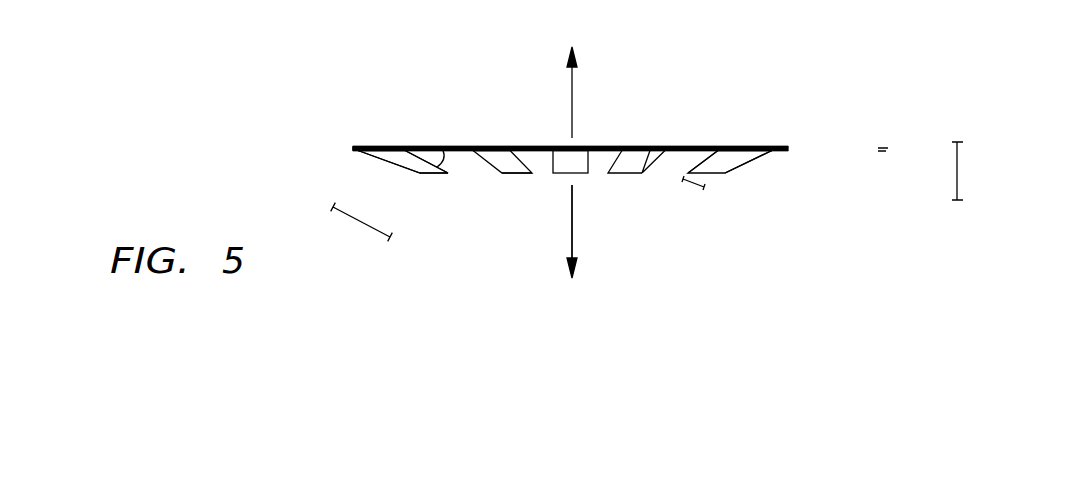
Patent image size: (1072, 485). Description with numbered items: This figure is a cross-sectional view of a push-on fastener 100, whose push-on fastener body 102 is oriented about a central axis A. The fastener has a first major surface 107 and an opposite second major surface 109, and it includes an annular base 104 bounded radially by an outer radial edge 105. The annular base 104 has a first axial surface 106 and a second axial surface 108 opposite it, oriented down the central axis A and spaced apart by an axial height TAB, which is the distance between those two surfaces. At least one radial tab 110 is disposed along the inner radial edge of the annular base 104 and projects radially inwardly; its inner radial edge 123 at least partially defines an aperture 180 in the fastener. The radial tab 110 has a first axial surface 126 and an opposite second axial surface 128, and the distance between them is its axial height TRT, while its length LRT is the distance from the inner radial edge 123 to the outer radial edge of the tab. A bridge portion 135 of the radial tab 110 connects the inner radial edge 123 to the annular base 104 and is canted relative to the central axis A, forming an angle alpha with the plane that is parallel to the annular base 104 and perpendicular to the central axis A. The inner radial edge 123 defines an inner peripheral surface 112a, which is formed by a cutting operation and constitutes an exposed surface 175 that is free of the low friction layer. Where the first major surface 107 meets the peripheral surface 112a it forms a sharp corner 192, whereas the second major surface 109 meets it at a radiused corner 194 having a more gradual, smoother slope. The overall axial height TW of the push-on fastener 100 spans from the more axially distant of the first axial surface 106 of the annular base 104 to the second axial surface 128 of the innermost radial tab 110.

The push-on fastener 100 is at (935, 90).
The push-on fastener body 102 is at (790, 147).
The annular base 104 is at (790, 151).
The outer radial edge 105 is at (353, 147).
The first axial surface 106 is at (367, 147).
The first major surface 107 is at (514, 147).
The second axial surface 108 is at (364, 155).
The second major surface 109 is at (533, 175).
The radial tab 110 is at (427, 176).
The inner peripheral surface 112a is at (582, 175).
The inner radial edge 123 is at (450, 175).
The first axial surface 126 is at (717, 148).
The second axial surface 128 is at (726, 175).
The bridge portion 135 is at (410, 170).
The exposed surface 175 is at (512, 175).
The aperture 180 is at (606, 180).
The sharp corner 192 is at (658, 146).
The radiused corner 194 is at (619, 146).
The central axis A is at (573, 90).
The angle alpha is at (449, 158).
The axial height of radial tab TRT is at (692, 186).
The axial height of annular base TAB is at (888, 150).
The axial height of push-on fastener TW is at (959, 170).
The length of radial tab LRT is at (360, 230).